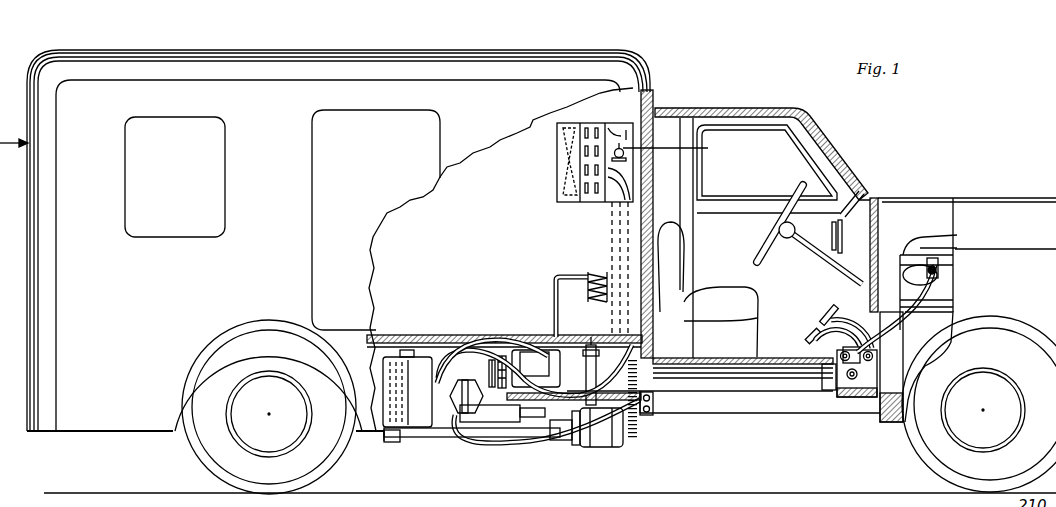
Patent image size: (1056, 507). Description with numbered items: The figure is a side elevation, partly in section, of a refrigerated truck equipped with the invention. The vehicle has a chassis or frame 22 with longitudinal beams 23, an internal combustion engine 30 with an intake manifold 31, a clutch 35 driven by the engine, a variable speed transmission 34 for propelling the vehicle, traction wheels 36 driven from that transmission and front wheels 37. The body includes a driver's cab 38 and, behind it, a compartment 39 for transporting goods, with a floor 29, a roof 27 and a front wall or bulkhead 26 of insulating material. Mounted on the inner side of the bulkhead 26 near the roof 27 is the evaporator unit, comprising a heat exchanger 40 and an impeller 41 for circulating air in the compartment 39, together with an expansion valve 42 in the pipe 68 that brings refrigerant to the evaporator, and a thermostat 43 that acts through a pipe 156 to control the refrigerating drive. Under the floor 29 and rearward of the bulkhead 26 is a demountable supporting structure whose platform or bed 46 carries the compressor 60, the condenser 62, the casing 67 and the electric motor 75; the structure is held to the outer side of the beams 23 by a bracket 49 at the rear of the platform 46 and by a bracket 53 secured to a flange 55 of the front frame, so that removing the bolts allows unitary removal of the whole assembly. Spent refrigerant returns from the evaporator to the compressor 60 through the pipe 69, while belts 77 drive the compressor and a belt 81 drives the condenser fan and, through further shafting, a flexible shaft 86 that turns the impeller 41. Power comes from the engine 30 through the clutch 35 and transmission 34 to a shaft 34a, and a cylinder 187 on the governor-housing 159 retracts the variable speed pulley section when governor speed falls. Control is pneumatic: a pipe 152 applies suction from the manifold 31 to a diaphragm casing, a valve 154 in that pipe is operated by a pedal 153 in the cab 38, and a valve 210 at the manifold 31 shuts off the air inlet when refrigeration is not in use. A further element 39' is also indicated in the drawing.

The roof 27 is at (577, 50).
The front wall or bulkhead 26 is at (648, 100).
The expansion valve 42 is at (675, 151).
The pipe 68 is at (620, 136).
The impeller 41 is at (558, 201).
The heat exchanger 40 is at (593, 190).
The compartment 39 is at (501, 259).
The driver's cab 38 is at (765, 249).
The valve 210 is at (940, 257).
The intake manifold 31 is at (945, 273).
The pipe 152 is at (955, 301).
The pedal 153 is at (817, 337).
The valve 154 is at (827, 351).
The internal combustion engine 30 is at (967, 310).
The clutch 35 is at (897, 351).
The variable speed transmission 34 is at (860, 398).
The shaft 34a is at (717, 379).
The chassis or frame 22 is at (783, 409).
The longitudinal beams 23 is at (833, 413).
The front wheels 37 is at (979, 404).
The traction wheels 36 is at (322, 466).
The bracket 49 is at (382, 436).
The condenser 62 is at (398, 434).
The platform or bed 46 is at (452, 438).
The flexible shaft 86 is at (527, 446).
The governor-housing 159 is at (562, 444).
The gear 39' is at (643, 415).
The cylinder 187 is at (507, 408).
The electric motor 75 is at (536, 368).
The casing 67 is at (402, 354).
The floor 29 is at (428, 336).
The pipe 69 is at (457, 350).
The compressor 60 is at (487, 347).
The belt 81 is at (548, 332).
The belts 77 is at (527, 349).
The thermostat 43 is at (590, 302).
The bracket 53 is at (587, 342).
The flange 55 is at (596, 341).
The pipe 156 is at (563, 278).